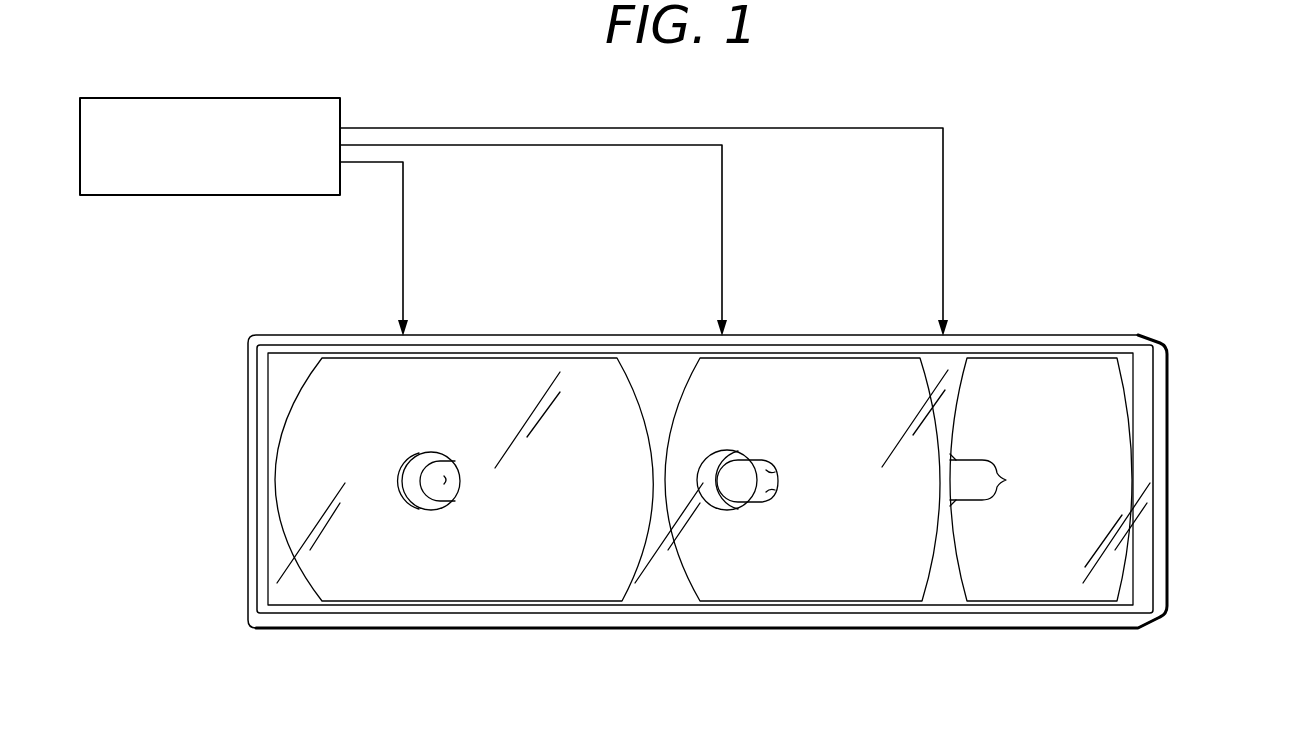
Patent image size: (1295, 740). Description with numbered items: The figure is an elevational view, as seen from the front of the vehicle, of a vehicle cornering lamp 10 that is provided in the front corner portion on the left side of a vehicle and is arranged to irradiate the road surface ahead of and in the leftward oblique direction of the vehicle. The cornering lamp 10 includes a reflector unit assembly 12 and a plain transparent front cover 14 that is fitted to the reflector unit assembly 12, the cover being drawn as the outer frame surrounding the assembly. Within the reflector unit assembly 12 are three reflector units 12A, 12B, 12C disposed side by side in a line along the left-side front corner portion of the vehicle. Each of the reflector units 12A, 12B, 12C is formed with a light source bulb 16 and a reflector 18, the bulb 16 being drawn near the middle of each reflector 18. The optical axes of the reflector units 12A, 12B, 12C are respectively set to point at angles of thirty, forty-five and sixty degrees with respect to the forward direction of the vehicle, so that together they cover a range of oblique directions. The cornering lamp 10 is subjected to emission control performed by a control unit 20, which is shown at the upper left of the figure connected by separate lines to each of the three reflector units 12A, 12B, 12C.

The vehicle cornering lamp 10 is at (1046, 214).
The reflector unit assembly 12 is at (649, 327).
The reflector unit 12A is at (540, 586).
The reflector unit 12B is at (828, 586).
The reflector unit 12C is at (1043, 586).
The plain transparent front cover 14 is at (1178, 395).
The light source bulb 16 is at (437, 492).
The reflector 18 is at (438, 415).
The control unit 20 is at (242, 98).